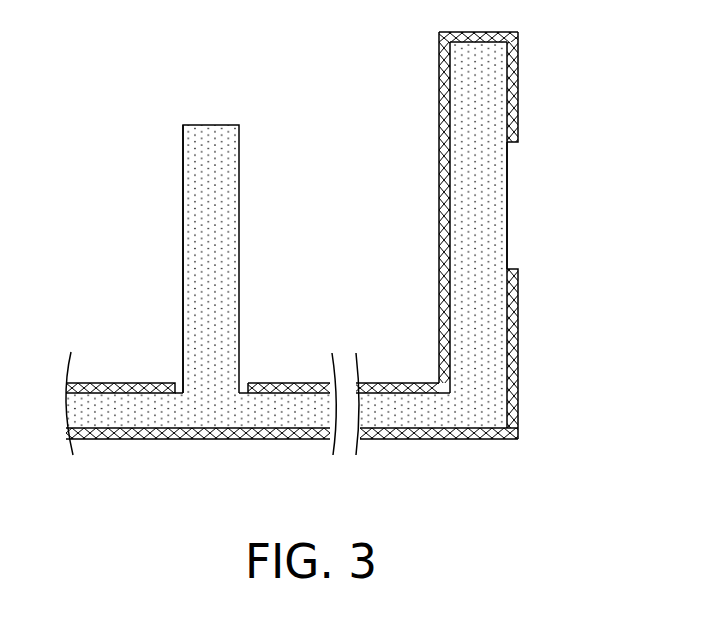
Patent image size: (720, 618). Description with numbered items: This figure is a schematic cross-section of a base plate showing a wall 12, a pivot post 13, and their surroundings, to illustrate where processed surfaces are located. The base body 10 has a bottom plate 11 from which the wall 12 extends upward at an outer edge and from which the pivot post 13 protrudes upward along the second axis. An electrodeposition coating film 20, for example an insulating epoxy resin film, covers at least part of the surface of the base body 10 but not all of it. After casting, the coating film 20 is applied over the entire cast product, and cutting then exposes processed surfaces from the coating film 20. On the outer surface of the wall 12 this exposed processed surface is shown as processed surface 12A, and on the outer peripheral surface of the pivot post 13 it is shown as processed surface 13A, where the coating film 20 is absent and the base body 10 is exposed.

The base body 10 is at (345, 243).
The bottom plate 11 is at (372, 400).
The wall 12 is at (485, 106).
The pivot post 13 is at (213, 165).
The processed surface of the wall 12A is at (508, 220).
The processed surface of the pivot post 13A is at (182, 245).
The electrodeposition coating film 20 is at (512, 317).